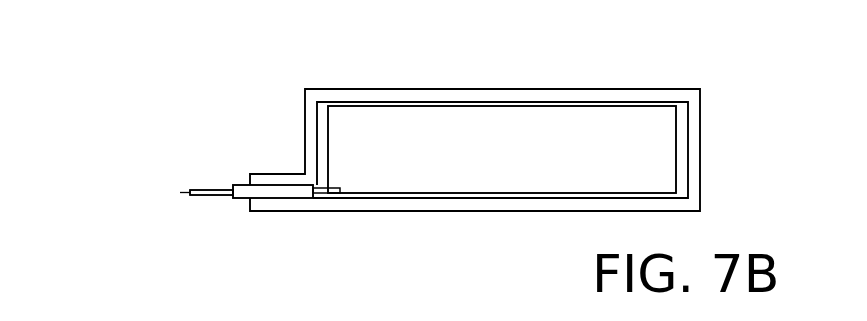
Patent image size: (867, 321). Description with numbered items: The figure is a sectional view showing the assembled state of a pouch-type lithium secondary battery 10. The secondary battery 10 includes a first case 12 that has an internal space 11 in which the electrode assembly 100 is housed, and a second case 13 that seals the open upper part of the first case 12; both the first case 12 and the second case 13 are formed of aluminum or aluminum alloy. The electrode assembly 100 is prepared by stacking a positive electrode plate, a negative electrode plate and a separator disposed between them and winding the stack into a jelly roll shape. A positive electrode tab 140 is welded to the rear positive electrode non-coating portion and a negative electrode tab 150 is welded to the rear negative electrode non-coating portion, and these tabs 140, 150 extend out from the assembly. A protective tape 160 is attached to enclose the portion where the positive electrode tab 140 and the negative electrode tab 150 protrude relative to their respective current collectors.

The secondary battery 10 is at (173, 63).
The internal space 11 is at (689, 186).
The first case 12 is at (608, 89).
The second case 13 is at (397, 210).
The electrode assembly 100 is at (668, 145).
The positive electrode tab 140 is at (188, 193).
The negative electrode tab 150 is at (206, 192).
The protective tape 160 is at (247, 197).